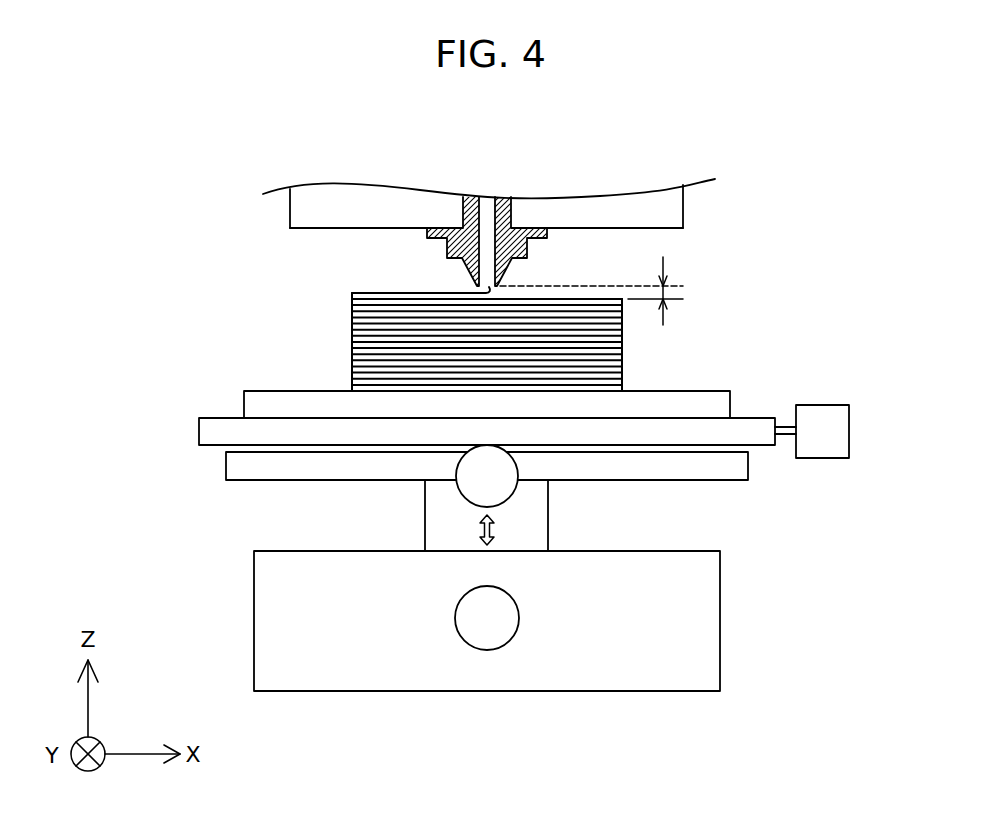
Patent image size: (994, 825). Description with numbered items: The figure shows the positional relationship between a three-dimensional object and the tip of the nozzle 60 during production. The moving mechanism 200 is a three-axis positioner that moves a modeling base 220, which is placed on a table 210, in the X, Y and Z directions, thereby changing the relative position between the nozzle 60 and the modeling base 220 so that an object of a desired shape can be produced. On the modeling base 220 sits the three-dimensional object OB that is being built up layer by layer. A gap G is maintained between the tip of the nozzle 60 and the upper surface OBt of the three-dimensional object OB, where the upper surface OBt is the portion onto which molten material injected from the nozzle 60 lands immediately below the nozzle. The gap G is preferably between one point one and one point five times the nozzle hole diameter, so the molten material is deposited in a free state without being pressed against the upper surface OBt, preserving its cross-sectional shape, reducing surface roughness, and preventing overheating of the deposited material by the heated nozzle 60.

The nozzle 60 is at (468, 268).
The three-dimensional object OB is at (350, 335).
The upper surface of the three-dimensional object OBt is at (553, 299).
The gap G is at (603, 291).
The table 210 is at (237, 417).
The modeling base 220 is at (668, 391).
The moving mechanism 200 is at (813, 368).